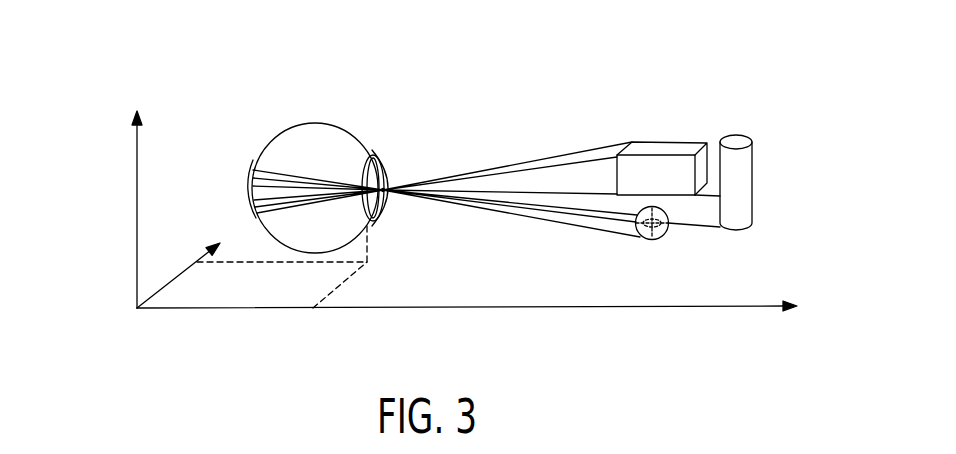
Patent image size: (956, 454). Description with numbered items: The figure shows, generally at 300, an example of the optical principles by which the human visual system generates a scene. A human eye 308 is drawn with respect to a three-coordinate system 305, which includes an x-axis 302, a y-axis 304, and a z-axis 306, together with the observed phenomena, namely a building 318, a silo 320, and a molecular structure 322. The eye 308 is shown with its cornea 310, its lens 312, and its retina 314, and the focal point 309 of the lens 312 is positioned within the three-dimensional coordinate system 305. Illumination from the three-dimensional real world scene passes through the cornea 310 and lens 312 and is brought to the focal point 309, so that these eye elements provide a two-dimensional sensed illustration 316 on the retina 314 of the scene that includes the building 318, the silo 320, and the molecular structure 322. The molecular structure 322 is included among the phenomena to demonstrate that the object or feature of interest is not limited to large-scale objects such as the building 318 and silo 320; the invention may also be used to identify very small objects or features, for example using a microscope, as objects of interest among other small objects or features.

The optical principles example 300 is at (547, 72).
The x-axis 302 is at (375, 310).
The y-axis 304 is at (172, 280).
The three-coordinate system 305 is at (123, 175).
The z-axis 306 is at (137, 262).
The human eye 308 is at (360, 144).
The focal point 309 is at (364, 186).
The cornea 310 is at (387, 168).
The lens 312 is at (376, 221).
The retina 314 is at (252, 170).
The 2-D sensed illustration 316 is at (253, 195).
The building 318 is at (660, 141).
The silo 320 is at (752, 178).
The molecular structure 322 is at (640, 237).